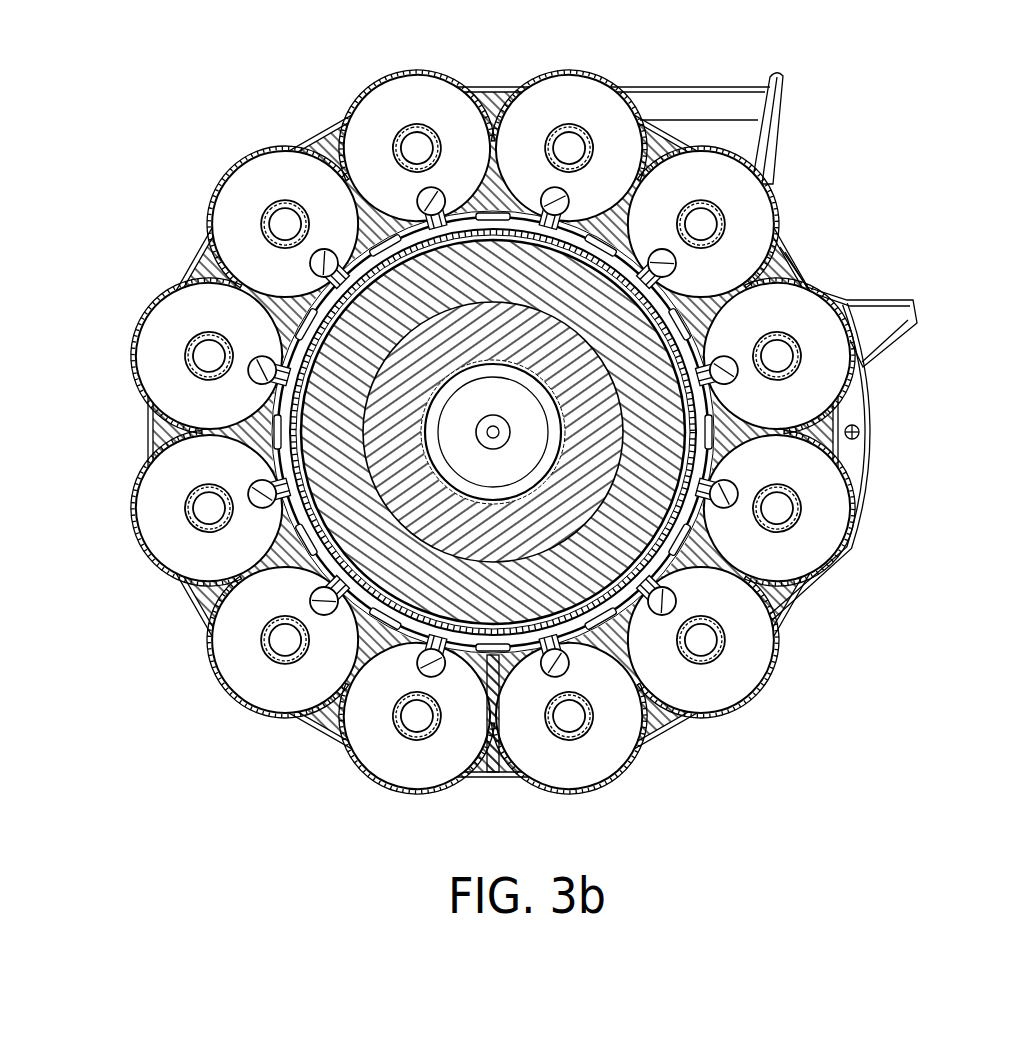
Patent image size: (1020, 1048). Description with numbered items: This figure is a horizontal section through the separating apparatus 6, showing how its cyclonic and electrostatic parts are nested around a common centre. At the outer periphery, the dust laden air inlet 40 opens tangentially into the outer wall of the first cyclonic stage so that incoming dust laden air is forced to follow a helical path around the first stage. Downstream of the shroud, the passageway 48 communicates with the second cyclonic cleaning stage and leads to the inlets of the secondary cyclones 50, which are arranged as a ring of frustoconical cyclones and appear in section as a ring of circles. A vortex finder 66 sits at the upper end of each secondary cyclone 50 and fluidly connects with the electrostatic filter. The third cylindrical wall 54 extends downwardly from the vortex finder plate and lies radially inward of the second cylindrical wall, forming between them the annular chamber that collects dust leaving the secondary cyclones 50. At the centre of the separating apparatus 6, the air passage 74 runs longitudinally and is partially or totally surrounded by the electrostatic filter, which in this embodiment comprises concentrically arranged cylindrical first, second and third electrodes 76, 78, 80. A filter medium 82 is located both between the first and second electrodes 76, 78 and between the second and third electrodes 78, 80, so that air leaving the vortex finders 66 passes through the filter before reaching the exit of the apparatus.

The separating apparatus 6 is at (483, 425).
The dust laden air inlet 40 is at (697, 108).
The passageway 48 is at (700, 352).
The secondary cyclone 50 is at (382, 108).
The third cylindrical wall 54 is at (527, 644).
The vortex finder 66 is at (407, 740).
The air passage 74 is at (190, 582).
The first electrode 76 is at (489, 712).
The second electrode 78 is at (565, 650).
The third electrode 80 is at (777, 625).
The filter medium 82 is at (481, 338).